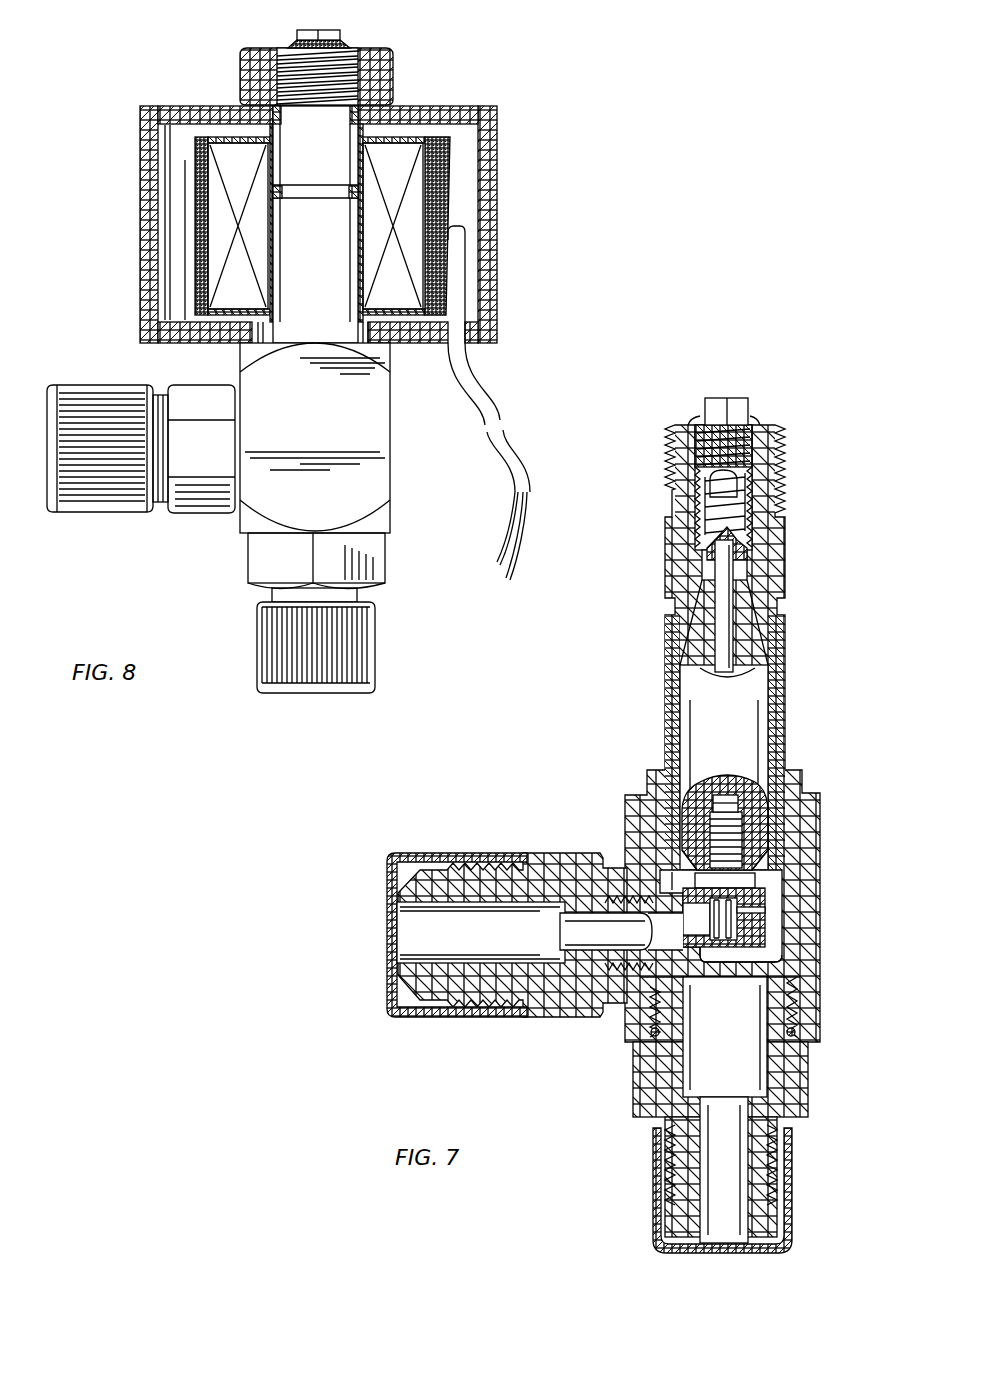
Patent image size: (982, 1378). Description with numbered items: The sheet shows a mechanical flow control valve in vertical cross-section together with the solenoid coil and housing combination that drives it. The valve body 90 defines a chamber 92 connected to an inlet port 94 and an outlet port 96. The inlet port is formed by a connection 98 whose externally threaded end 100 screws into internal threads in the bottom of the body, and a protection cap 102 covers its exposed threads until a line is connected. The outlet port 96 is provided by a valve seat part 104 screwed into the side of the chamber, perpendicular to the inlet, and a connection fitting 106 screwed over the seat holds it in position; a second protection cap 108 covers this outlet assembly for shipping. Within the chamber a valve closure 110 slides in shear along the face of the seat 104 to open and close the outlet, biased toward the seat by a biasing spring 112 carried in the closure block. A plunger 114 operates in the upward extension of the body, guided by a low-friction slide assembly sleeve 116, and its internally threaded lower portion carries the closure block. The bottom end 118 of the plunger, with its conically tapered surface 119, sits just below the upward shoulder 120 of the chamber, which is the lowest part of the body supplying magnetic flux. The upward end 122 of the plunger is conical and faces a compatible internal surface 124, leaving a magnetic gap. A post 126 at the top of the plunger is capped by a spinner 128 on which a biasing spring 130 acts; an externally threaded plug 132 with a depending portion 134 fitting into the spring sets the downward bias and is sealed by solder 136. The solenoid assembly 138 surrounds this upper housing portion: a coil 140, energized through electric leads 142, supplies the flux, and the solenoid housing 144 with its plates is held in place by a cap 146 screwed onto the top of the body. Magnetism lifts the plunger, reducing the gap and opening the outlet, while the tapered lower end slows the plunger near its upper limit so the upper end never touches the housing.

In FIG. 7, the valve body 90 is at (790, 795).
In FIG. 7, the chamber 92 is at (780, 928).
In FIG. 7, the inlet port 94 is at (728, 1030).
In FIG. 7, the outlet port 96 is at (468, 913).
In FIG. 7, the connection 98 is at (810, 1068).
In FIG. 7, the externally threaded end 100 is at (803, 989).
In FIG. 8, the protection cap 102 is at (383, 668).
In FIG. 7, the protection cap 102 is at (792, 1210).
In FIG. 7, the valve seat part 104 is at (640, 965).
In FIG. 7, the connection fitting 106 is at (462, 1007).
In FIG. 8, the protection cap 108 is at (108, 515).
In FIG. 7, the protection cap 108 is at (390, 903).
In FIG. 7, the valve closure 110 is at (760, 960).
In FIG. 7, the biasing spring 112 is at (760, 920).
In FIG. 7, the plunger 114 is at (730, 715).
In FIG. 7, the slide assembly sleeve 116 is at (780, 828).
In FIG. 7, the bottom end of plunger 118 is at (760, 884).
In FIG. 7, the conically tapered surface 119 is at (660, 862).
In FIG. 7, the upward shoulder 120 is at (770, 887).
In FIG. 7, the upward end of plunger 122 is at (765, 645).
In FIG. 7, the internal compatible surface 124 is at (750, 600).
In FIG. 7, the post 126 is at (722, 582).
In FIG. 7, the spinner 128 is at (748, 555).
In FIG. 7, the biasing spring 130 is at (748, 515).
In FIG. 7, the externally threaded plug 132 is at (742, 398).
In FIG. 7, the depending portion 134 is at (750, 460).
In FIG. 7, the solder 136 is at (700, 420).
In FIG. 8, the solenoid assembly 138 is at (118, 242).
In FIG. 8, the coil 140 is at (410, 140).
In FIG. 8, the electric leads 142 is at (515, 492).
In FIG. 8, the solenoid housing 144 is at (494, 175).
In FIG. 8, the cap 146 is at (396, 55).